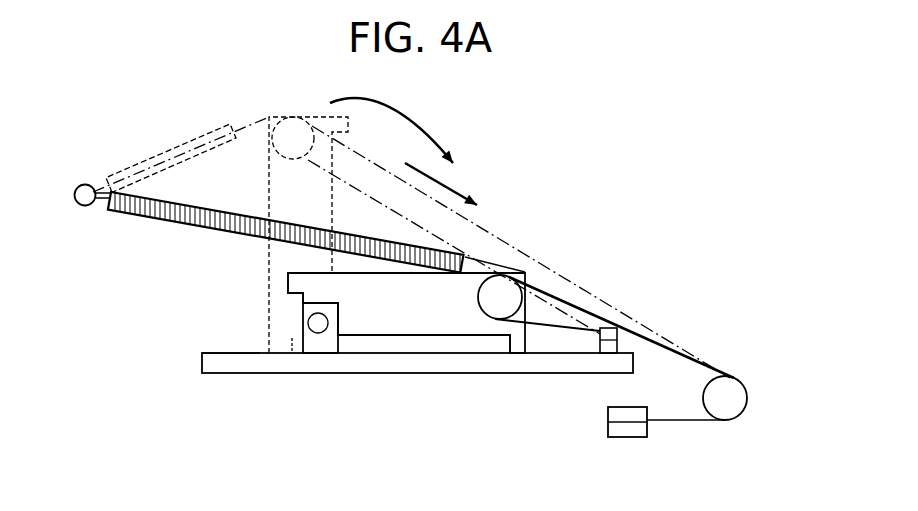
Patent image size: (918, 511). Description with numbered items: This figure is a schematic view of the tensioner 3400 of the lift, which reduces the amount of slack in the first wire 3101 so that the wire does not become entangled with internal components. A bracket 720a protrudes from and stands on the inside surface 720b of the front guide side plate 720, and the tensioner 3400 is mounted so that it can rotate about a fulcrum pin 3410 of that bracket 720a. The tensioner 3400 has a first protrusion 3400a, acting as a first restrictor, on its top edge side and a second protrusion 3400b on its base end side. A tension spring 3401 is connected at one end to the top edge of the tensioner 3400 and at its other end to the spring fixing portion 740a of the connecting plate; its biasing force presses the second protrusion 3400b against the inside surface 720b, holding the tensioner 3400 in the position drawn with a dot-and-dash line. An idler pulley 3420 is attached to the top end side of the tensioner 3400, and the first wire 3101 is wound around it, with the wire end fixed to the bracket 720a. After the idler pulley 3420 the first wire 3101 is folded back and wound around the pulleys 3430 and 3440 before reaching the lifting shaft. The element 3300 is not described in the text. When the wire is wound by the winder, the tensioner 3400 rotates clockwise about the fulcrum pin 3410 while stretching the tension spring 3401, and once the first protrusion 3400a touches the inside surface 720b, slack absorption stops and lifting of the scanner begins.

The spring fixing portion 740a is at (80, 184).
The tension spring 3401 is at (135, 214).
The tensioner 3400 is at (475, 280).
The idler pulley 3420 is at (512, 295).
The belt 3300 is at (613, 326).
The first wire 3101 is at (682, 345).
The pulley 3430 is at (742, 397).
The pulley 3440 is at (627, 438).
The first protrusion 3400a is at (520, 348).
The front guide side plate 720 is at (383, 366).
The bracket 720a is at (300, 320).
The inside surface 720b is at (232, 353).
The second protrusion 3400b is at (288, 284).
The fulcrum pin 3410 is at (340, 317).